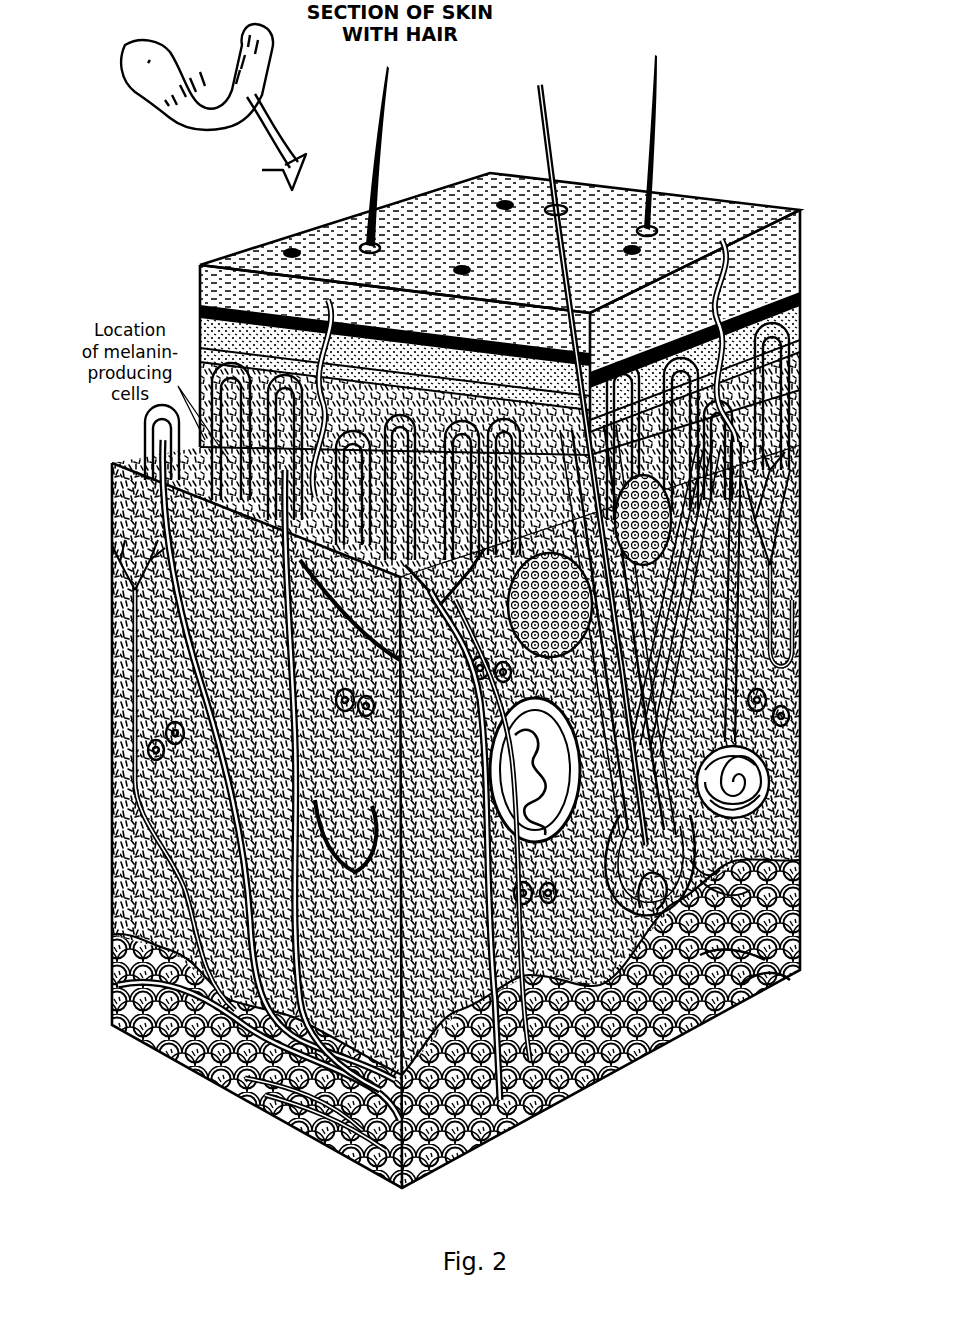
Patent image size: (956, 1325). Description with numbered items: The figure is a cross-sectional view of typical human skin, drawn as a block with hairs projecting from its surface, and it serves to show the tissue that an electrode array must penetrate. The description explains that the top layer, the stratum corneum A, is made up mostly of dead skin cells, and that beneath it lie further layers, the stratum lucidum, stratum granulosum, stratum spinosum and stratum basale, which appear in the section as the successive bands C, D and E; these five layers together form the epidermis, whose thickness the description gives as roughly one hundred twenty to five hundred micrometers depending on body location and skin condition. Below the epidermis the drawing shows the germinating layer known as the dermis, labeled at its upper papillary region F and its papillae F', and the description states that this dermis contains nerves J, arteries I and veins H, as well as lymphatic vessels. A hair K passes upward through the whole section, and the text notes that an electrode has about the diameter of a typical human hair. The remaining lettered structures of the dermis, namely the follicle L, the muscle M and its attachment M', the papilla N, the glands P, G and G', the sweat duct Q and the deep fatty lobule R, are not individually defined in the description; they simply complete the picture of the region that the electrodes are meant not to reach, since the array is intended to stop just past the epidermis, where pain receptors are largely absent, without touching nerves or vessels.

The stratum corneum (horny layer) of epidermis A is at (745, 228).
The stratum granulosum layer C is at (800, 303).
The stratum spinosum (prickle cell layer) D is at (800, 331).
The basal layer with melanin-producing cells E is at (198, 343).
The papillary layer of dermis F is at (455, 443).
The dermal papillae with capillary loops F' is at (468, 441).
The sweat gland and duct Q is at (206, 312).
The hair K is at (660, 173).
The hair follicle L is at (652, 220).
The nerve J is at (133, 805).
The artery I is at (165, 729).
The vein H is at (150, 749).
The arrector pili muscle M is at (729, 660).
The muscle attachment M' is at (765, 890).
The hair papilla N is at (700, 930).
The subcutaneous fat lobule R is at (760, 968).
The gland / corpuscle G is at (492, 836).
The gland duct G' is at (532, 857).
The sebaceous gland P is at (589, 566).